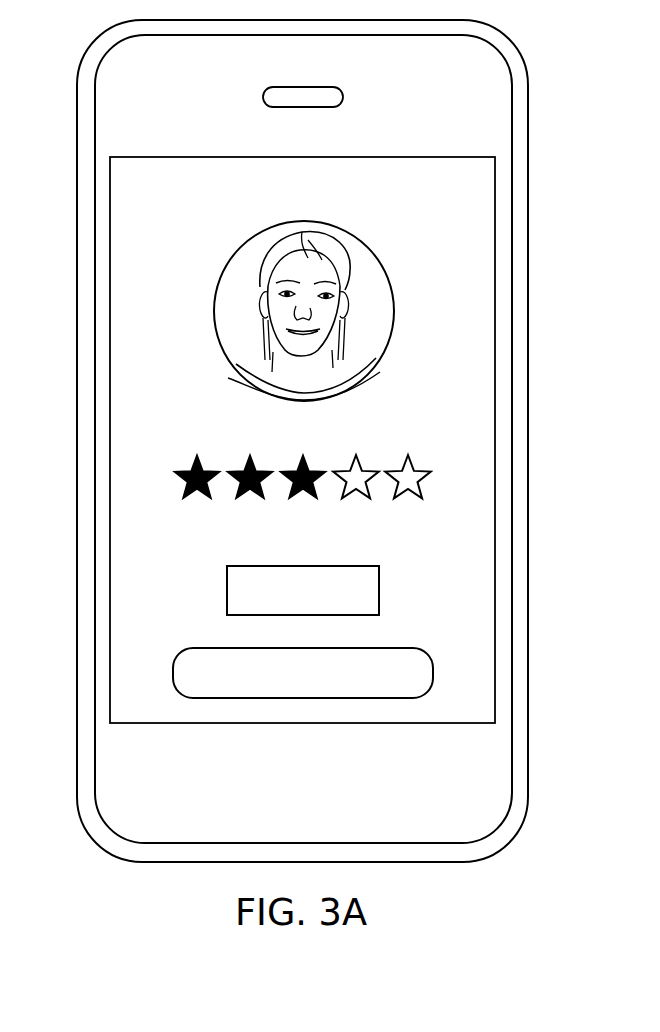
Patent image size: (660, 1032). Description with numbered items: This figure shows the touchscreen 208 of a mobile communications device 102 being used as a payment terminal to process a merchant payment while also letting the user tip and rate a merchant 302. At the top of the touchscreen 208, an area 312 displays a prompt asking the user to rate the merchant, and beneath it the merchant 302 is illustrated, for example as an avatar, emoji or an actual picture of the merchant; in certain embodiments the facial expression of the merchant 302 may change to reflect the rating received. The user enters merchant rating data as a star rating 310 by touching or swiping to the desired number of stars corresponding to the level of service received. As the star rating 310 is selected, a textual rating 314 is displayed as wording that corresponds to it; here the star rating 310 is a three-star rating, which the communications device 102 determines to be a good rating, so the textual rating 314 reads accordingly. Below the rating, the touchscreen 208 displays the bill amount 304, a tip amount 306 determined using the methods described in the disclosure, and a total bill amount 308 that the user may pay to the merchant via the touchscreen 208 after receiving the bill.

The mobile communications device 102 is at (528, 82).
The touchscreen 208 is at (452, 355).
The merchant 302 is at (345, 279).
The bill amount 304 is at (356, 528).
The tip amount 306 is at (401, 585).
The total bill amount 308 is at (448, 675).
The star rating 310 is at (441, 482).
The area 312 is at (492, 185).
The textual rating 314 is at (434, 431).